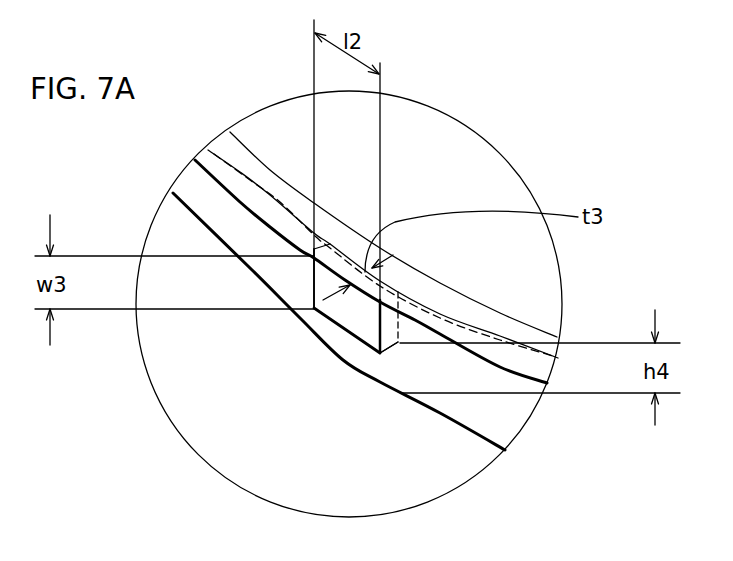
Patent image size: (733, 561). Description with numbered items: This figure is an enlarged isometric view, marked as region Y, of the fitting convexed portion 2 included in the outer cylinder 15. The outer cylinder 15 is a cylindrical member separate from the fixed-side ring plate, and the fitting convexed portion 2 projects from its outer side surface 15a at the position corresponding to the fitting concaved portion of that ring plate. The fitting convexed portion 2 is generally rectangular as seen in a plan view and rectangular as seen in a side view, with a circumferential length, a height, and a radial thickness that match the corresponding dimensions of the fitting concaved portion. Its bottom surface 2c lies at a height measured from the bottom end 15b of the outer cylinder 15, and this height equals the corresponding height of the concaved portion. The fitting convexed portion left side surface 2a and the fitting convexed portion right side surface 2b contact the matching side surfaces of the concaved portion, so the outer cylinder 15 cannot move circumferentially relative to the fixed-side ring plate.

The enlarged view region Y is at (508, 157).
The outer cylinder 15 is at (300, 123).
The outer side surface 15a is at (537, 273).
The bottom end 15b is at (206, 226).
The fitting convexed portion 2 is at (347, 296).
The fitting convexed portion left side surface 2a is at (322, 290).
The fitting convexed portion right side surface 2b is at (390, 328).
The bottom surface 2c is at (360, 318).